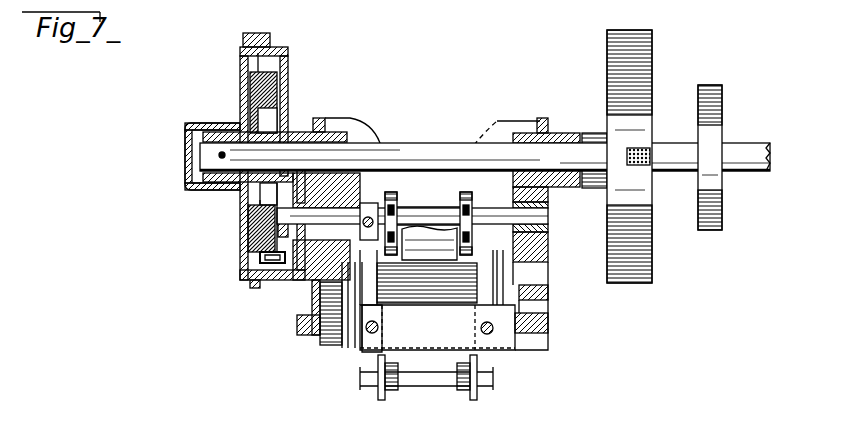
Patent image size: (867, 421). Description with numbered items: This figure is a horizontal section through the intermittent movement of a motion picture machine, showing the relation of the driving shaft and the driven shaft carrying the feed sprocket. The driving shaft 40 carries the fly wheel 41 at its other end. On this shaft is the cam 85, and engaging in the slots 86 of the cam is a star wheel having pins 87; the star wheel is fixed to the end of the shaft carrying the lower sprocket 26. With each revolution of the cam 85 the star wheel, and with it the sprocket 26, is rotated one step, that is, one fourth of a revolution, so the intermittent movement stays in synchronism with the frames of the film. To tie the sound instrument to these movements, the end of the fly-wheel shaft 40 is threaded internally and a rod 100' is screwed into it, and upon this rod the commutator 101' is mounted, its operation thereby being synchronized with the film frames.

The lower sprocket 26 is at (458, 200).
The shaft 40 is at (432, 156).
The fly wheel 41 is at (612, 80).
The cam 85 is at (248, 233).
The slots 86 is at (262, 197).
The pins 87 is at (282, 264).
The rod 100' is at (665, 183).
The commutator 101' is at (735, 157).